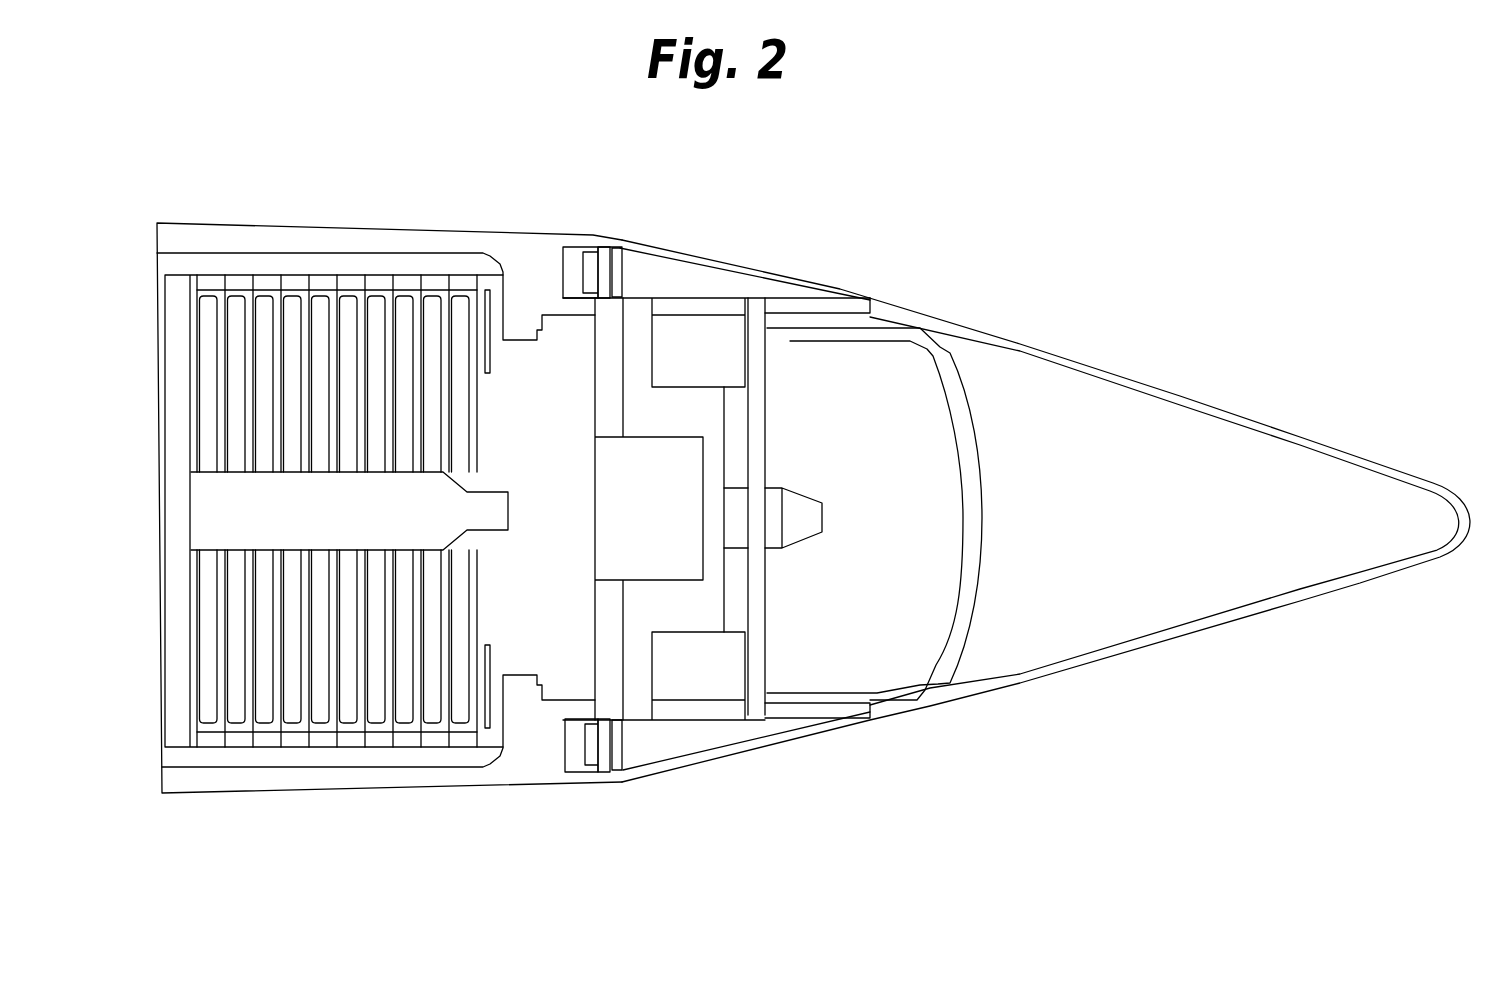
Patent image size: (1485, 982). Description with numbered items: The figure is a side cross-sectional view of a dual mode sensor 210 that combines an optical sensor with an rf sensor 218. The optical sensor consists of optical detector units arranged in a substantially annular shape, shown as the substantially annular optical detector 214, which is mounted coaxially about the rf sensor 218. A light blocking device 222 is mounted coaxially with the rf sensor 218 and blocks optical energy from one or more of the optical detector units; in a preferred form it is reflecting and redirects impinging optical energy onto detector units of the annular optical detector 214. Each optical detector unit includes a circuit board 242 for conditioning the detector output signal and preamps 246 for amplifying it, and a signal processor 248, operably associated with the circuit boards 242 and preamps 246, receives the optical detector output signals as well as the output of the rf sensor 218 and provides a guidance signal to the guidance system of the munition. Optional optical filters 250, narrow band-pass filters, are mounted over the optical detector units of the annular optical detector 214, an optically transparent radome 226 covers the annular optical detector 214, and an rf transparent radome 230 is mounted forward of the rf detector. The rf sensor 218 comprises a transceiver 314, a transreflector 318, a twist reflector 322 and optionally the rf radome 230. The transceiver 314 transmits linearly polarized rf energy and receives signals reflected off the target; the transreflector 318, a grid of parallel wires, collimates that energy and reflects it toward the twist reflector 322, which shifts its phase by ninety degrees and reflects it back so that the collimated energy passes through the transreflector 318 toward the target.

The dual mode sensor 210 is at (1157, 693).
The substantially annular optical detector 214 is at (611, 243).
The rf sensor 218 is at (683, 682).
The light blocking device 222 is at (717, 298).
The optically transparent radome 226 is at (815, 283).
The rf transparent radome 230 is at (1140, 370).
The circuit board 242 is at (597, 773).
The preamps 246 is at (583, 773).
The signal processor 248 is at (397, 697).
The optical filters 250 is at (620, 245).
The transceiver 314 is at (720, 700).
The transreflector 318 is at (957, 657).
The twist reflector 322 is at (767, 385).